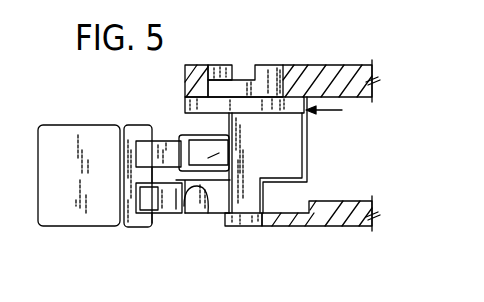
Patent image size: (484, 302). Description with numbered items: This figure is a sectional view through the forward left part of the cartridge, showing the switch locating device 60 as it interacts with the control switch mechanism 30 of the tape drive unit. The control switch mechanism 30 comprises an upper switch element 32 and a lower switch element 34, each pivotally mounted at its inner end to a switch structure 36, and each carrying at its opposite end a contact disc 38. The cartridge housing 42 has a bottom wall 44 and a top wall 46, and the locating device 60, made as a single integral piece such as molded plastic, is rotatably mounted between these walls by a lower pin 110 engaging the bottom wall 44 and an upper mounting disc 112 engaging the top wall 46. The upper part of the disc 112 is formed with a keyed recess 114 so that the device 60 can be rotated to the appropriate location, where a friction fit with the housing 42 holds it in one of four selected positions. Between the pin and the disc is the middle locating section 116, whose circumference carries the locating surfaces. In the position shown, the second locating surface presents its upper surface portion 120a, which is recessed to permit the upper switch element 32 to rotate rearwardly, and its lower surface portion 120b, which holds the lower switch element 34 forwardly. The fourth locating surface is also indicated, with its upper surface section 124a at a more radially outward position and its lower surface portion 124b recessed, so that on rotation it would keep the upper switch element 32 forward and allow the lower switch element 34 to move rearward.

The control switch mechanism 30 is at (68, 118).
The upper switch element 32 is at (151, 132).
The lower switch element 34 is at (158, 221).
The switch structure 36 is at (62, 133).
The contact discs 38 is at (228, 165).
The housing 42 is at (325, 58).
The bottom wall 44 is at (340, 226).
The top wall 46 is at (338, 65).
The switch locating device 60 is at (335, 110).
The lower pin 110 is at (250, 224).
The upper mounting disc 112 is at (261, 90).
The keyed recess 114 is at (245, 72).
The middle locating section 116 is at (307, 124).
The upper surface portion of second locating surface 120a is at (229, 150).
The lower surface portion of second locating surface 120b is at (177, 200).
The upper surface section of fourth locating surface 124a is at (308, 162).
The lower surface portion of fourth locating surface 124b is at (263, 203).